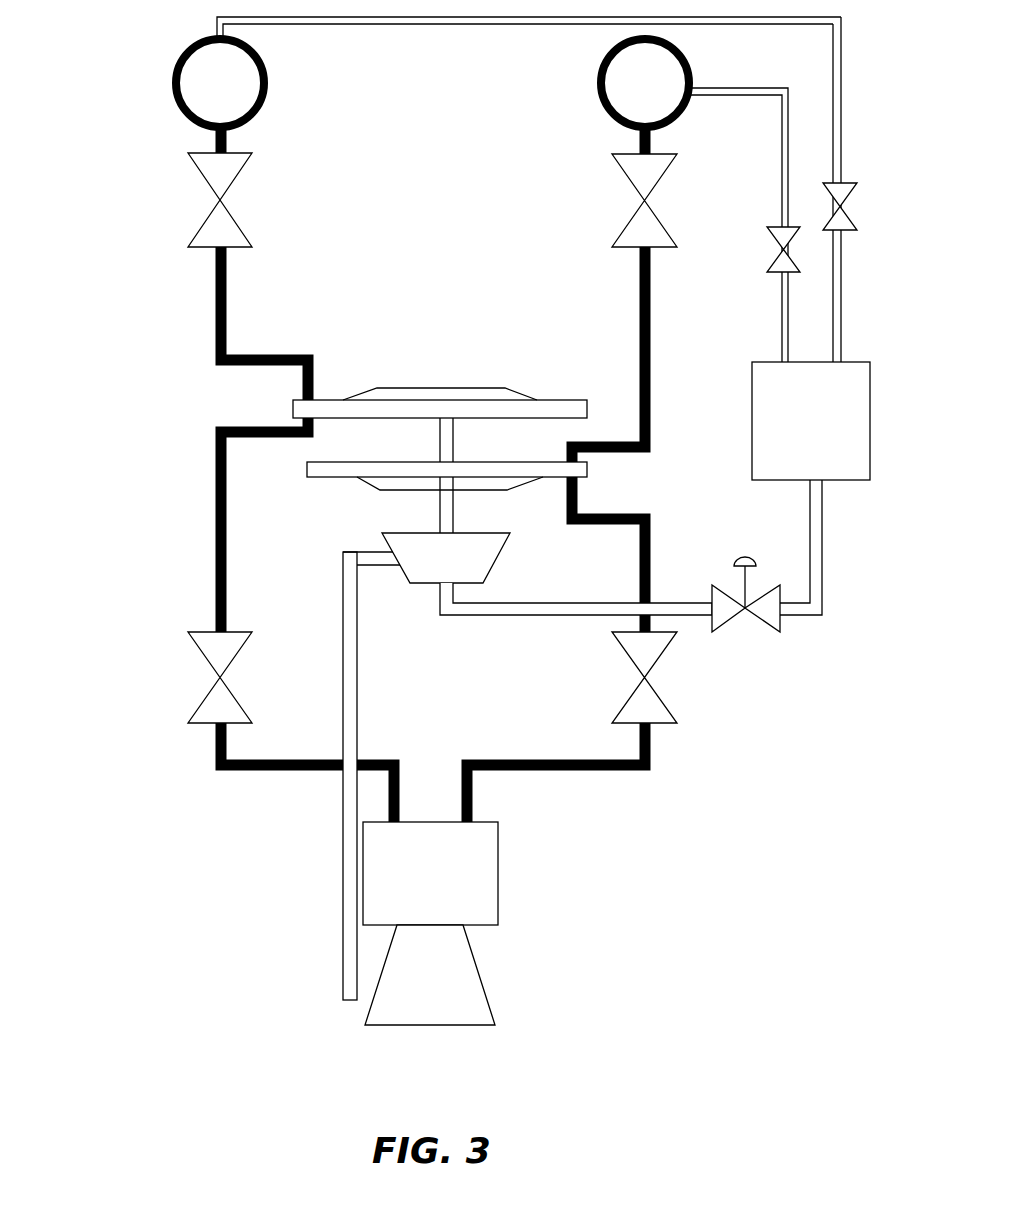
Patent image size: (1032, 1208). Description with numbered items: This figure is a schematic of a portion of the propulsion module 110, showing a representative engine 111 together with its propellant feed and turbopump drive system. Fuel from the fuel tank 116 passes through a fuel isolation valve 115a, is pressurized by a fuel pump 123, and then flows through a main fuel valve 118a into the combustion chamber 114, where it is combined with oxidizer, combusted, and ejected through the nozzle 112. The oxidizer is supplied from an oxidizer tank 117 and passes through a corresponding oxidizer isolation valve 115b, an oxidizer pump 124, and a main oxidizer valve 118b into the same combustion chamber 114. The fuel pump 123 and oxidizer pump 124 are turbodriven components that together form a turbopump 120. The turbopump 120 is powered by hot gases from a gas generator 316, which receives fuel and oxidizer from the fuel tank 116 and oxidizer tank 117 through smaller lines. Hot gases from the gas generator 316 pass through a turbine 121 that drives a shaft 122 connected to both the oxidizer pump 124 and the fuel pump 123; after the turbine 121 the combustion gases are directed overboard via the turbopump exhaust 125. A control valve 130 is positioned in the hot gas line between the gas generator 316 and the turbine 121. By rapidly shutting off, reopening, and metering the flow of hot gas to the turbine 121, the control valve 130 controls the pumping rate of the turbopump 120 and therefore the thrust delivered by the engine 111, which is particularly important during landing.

The propulsion module 110 is at (152, 420).
The engine 111 is at (520, 914).
The nozzle 112 is at (484, 993).
The combustion chamber 114 is at (498, 880).
The fuel isolation valve 115a is at (238, 222).
The oxidizer isolation valve 115b is at (632, 222).
The fuel tank 116 is at (267, 97).
The oxidizer tank 117 is at (597, 97).
The main fuel valve 118a is at (203, 696).
The main oxidizer valve 118b is at (667, 703).
The turbopump 120 is at (448, 439).
The turbine 121 is at (490, 568).
The shaft 122 is at (455, 515).
The fuel pump 123 is at (386, 388).
The oxidizer pump 124 is at (328, 478).
The turbopump exhaust 125 is at (342, 955).
The control valve 130 is at (754, 634).
The gas generator 316 is at (843, 480).